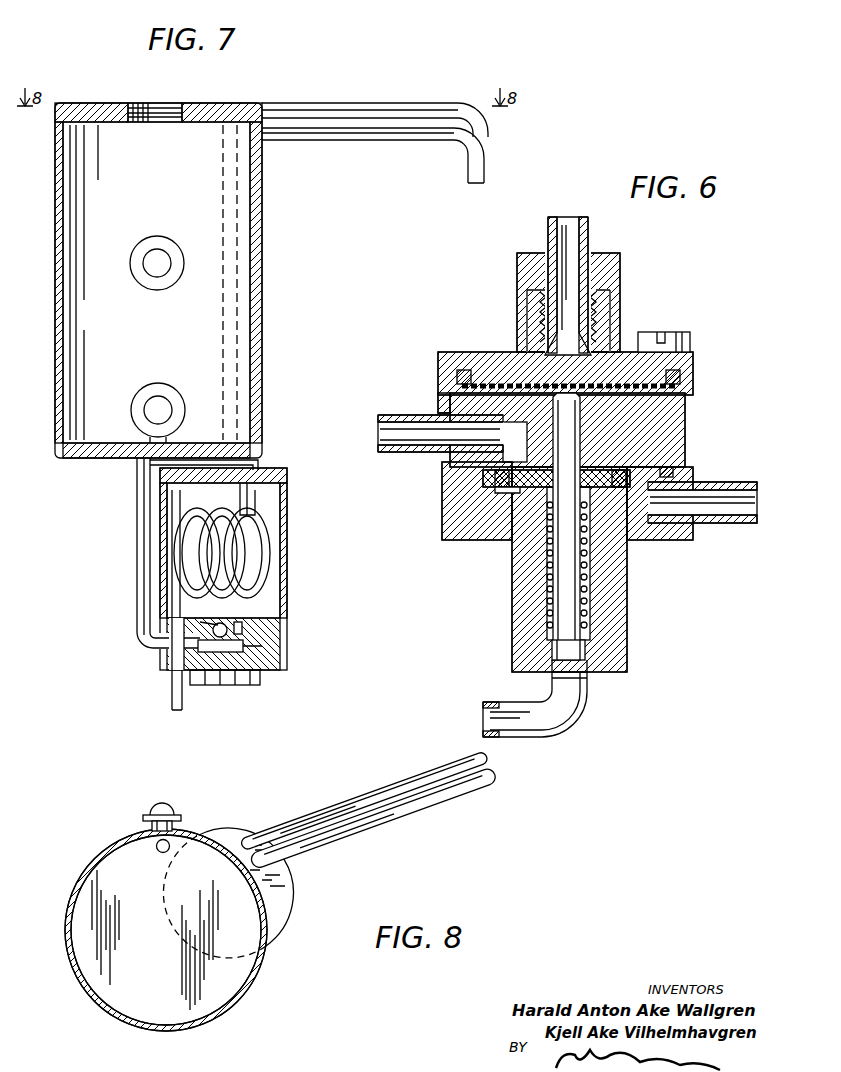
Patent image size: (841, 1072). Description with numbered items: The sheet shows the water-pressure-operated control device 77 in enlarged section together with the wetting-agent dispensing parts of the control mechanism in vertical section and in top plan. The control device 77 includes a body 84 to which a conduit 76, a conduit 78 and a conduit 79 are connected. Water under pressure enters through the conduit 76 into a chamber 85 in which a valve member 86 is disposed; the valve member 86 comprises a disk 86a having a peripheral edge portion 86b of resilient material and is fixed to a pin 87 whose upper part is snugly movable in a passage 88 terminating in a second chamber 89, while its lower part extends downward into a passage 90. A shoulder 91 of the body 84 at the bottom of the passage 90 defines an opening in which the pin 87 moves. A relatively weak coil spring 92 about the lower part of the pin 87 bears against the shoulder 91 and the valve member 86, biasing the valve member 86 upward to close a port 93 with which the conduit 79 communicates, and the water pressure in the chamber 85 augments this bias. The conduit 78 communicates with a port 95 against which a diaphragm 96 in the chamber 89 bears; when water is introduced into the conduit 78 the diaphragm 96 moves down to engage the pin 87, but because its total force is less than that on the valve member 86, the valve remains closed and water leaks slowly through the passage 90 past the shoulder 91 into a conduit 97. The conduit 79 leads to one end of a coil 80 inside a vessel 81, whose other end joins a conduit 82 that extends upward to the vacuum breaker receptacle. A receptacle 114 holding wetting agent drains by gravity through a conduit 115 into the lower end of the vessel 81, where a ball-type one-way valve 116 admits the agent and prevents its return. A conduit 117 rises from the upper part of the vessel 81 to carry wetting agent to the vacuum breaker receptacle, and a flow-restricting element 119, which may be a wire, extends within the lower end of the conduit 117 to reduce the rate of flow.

In FIG. 6, the conduit 76 is at (731, 524).
In FIG. 6, the control device 77 is at (600, 238).
In FIG. 6, the conduit 78 is at (546, 243).
In FIG. 7, the conduit 79 is at (176, 592).
In FIG. 6, the conduit 79 is at (398, 418).
In FIG. 7, the coil 80 is at (262, 553).
In FIG. 7, the vessel 81 is at (290, 531).
In FIG. 8, the vessel 81 is at (294, 922).
In FIG. 7, the conduit 82 is at (327, 103).
In FIG. 8, the conduit 82 is at (355, 799).
In FIG. 6, the body 84 is at (444, 523).
In FIG. 6, the chamber 85 is at (485, 491).
In FIG. 6, the valve member 86 is at (567, 470).
In FIG. 6, the disk 86a is at (623, 546).
In FIG. 6, the peripheral edge portion 86b is at (500, 493).
In FIG. 6, the pin 87 is at (682, 421).
In FIG. 6, the passage 88 is at (678, 437).
In FIG. 6, the second chamber 89 is at (628, 397).
In FIG. 6, the passage 90 is at (548, 600).
In FIG. 6, the shoulder 91 is at (588, 636).
In FIG. 6, the coil spring 92 is at (545, 576).
In FIG. 6, the port 93 is at (450, 452).
In FIG. 6, the port 95 is at (590, 312).
In FIG. 6, the diaphragm 96 is at (517, 385).
In FIG. 6, the conduit 97 is at (536, 737).
In FIG. 7, the receptacle 114 is at (261, 239).
In FIG. 8, the receptacle 114 is at (253, 985).
In FIG. 7, the conduit 115 is at (136, 511).
In FIG. 7, the ball-type one-way valve 116 is at (232, 622).
In FIG. 7, the conduit 117 is at (374, 138).
In FIG. 8, the conduit 117 is at (349, 829).
In FIG. 7, the flow-restricting element 119 is at (255, 500).